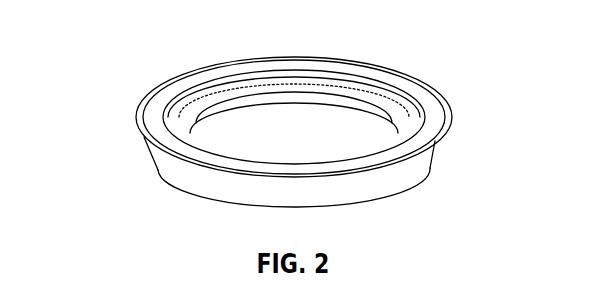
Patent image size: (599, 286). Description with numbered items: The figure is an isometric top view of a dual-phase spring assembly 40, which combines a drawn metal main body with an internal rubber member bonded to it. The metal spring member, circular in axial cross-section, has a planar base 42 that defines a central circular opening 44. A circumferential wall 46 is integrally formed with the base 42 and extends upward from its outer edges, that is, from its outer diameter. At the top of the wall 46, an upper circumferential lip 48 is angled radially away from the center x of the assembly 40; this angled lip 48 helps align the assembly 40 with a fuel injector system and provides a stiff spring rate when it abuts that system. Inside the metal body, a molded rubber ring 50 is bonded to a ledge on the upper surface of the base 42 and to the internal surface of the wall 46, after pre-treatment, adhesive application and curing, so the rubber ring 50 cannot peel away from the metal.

The dual-phase spring assembly 40 is at (122, 46).
The planar base 42 is at (362, 202).
The central circular opening 44 is at (272, 119).
The circumferential wall 46 is at (183, 170).
The upper circumferential lip 48 is at (134, 118).
The molded rubber ring 50 is at (308, 98).
The center x is at (351, 128).